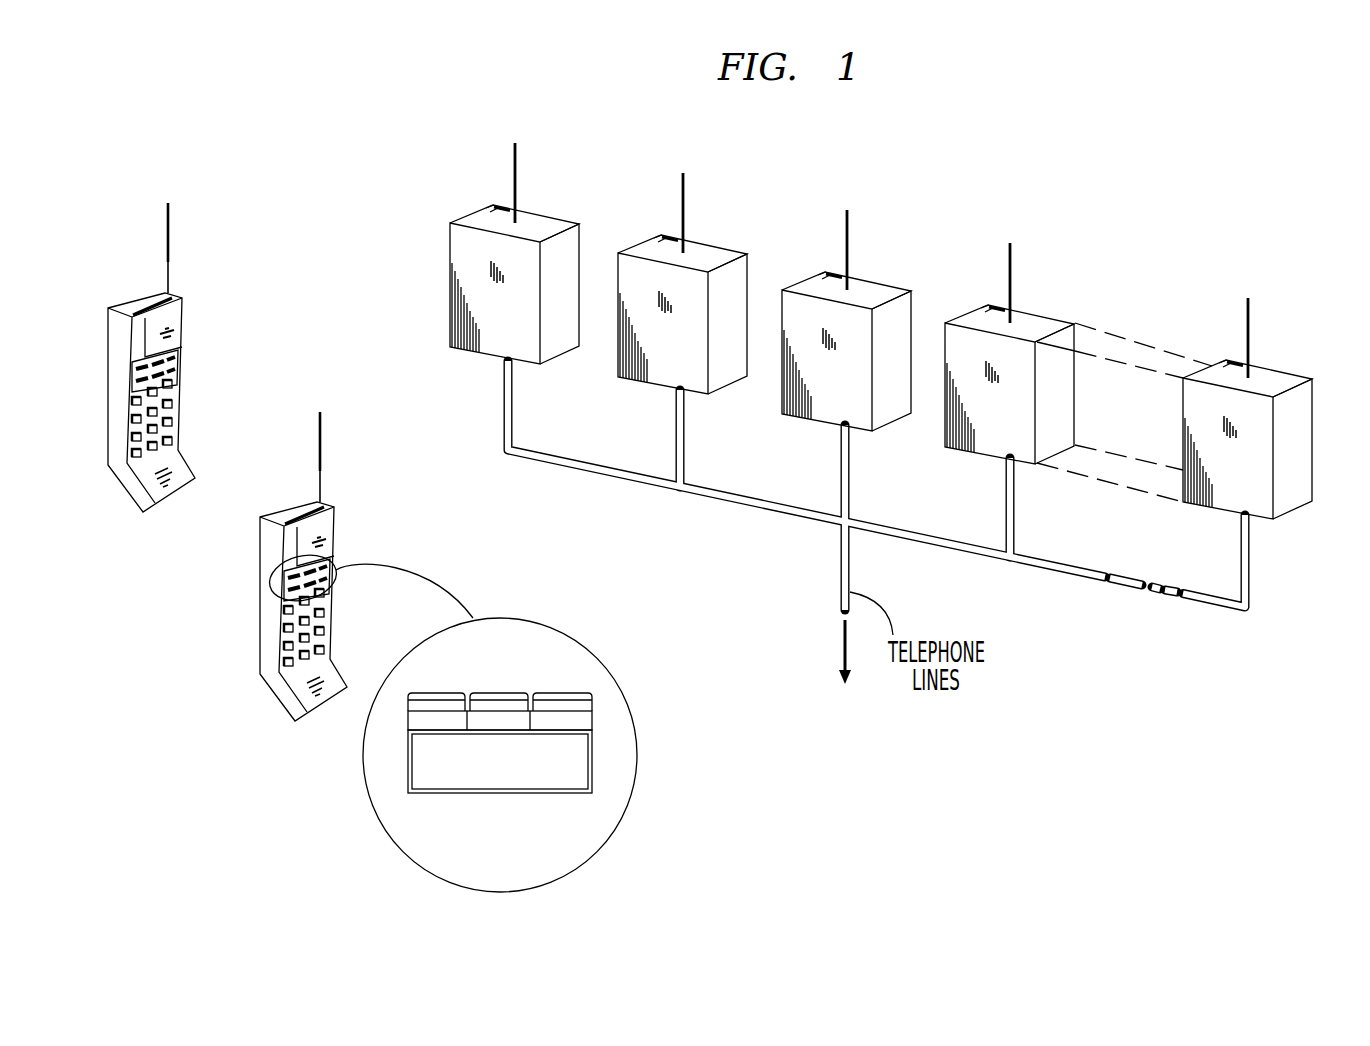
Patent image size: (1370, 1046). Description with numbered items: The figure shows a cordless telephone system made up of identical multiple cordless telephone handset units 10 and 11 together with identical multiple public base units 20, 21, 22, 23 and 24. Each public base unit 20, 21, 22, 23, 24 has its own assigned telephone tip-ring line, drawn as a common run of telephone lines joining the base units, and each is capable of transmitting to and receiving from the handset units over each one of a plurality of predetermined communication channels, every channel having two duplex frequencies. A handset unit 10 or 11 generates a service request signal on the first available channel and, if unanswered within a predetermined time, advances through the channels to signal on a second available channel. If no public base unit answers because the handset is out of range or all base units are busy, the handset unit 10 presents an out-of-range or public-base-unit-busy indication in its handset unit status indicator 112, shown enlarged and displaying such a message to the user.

The cordless telephone handset unit 10 is at (338, 535).
The cordless telephone handset unit 11 is at (187, 327).
The public base unit 20 is at (533, 210).
The public base unit 21 is at (710, 243).
The public base unit 22 is at (880, 280).
The public base unit 23 is at (1037, 315).
The public base unit 24 is at (1277, 370).
The handset unit status indicator 112 is at (614, 672).